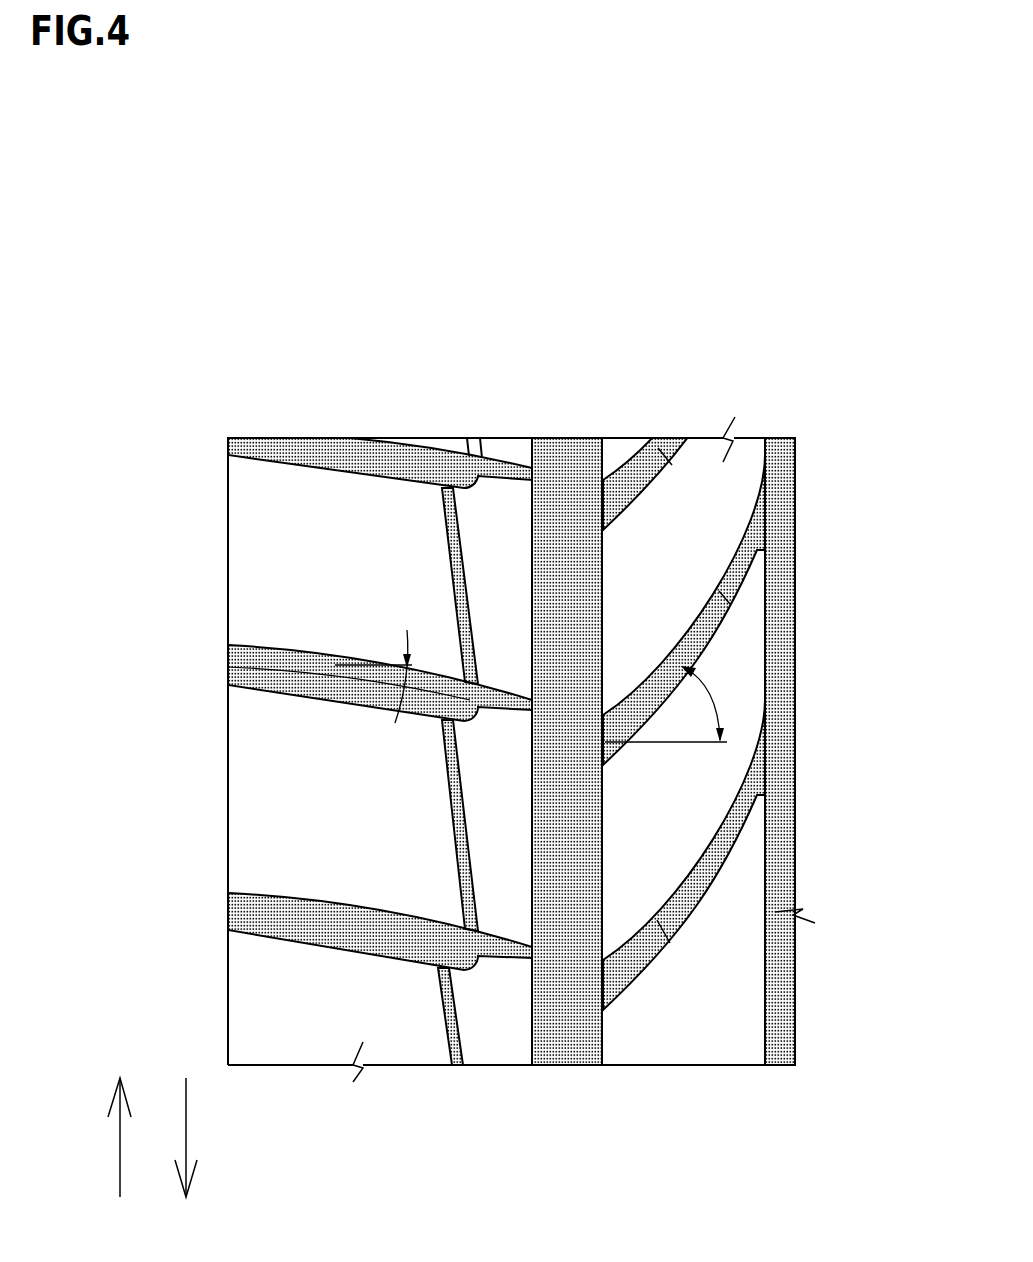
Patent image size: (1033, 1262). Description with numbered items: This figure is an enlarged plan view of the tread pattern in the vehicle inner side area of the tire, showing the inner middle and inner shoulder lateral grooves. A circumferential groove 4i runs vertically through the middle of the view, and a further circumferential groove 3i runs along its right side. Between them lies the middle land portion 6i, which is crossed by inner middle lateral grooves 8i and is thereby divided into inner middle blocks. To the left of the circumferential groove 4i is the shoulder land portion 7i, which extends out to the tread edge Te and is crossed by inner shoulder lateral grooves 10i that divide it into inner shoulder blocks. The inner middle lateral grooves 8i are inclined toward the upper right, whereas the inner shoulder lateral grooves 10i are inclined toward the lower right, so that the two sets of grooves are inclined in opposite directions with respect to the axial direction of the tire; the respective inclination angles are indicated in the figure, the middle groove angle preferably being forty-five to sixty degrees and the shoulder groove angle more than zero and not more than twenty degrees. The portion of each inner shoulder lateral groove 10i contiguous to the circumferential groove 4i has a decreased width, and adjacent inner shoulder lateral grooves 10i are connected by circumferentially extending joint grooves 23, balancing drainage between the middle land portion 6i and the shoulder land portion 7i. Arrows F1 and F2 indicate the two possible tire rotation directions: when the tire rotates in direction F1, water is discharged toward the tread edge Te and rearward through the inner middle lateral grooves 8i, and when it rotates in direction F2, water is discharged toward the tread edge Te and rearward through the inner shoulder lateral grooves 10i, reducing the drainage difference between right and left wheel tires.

The inner shoulder circumferential groove 3i is at (782, 462).
The circumferential groove 4i is at (564, 460).
The middle land portion 6i is at (665, 405).
The shoulder land portion 7i is at (322, 405).
The inner middle lateral grooves 8i is at (748, 580).
The inner shoulder lateral grooves 10i is at (297, 692).
The joint grooves 23 is at (442, 522).
The tread edge Te is at (228, 992).
The tire rotation direction F1 is at (120, 1154).
The tire rotation direction F2 is at (185, 1154).